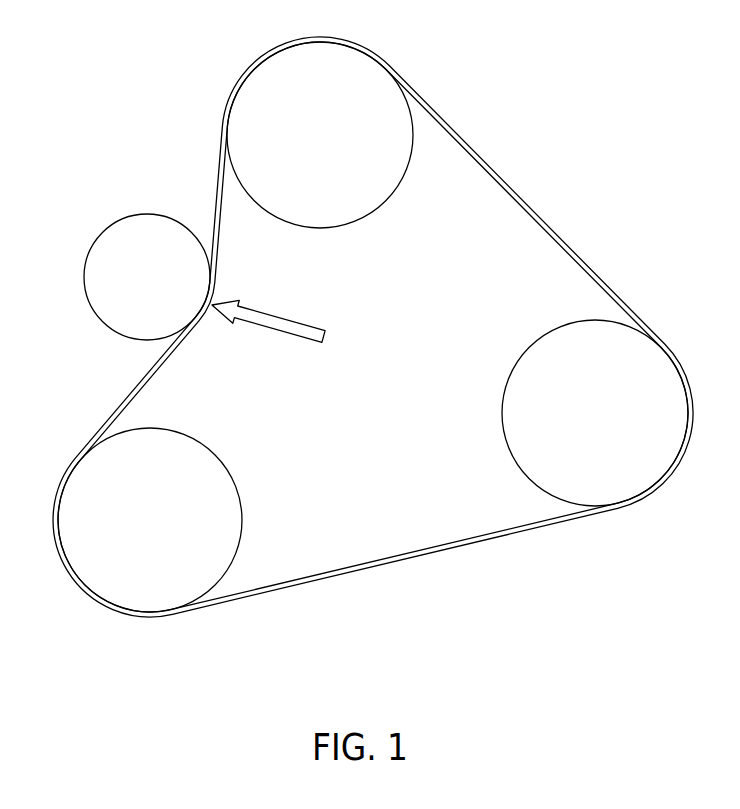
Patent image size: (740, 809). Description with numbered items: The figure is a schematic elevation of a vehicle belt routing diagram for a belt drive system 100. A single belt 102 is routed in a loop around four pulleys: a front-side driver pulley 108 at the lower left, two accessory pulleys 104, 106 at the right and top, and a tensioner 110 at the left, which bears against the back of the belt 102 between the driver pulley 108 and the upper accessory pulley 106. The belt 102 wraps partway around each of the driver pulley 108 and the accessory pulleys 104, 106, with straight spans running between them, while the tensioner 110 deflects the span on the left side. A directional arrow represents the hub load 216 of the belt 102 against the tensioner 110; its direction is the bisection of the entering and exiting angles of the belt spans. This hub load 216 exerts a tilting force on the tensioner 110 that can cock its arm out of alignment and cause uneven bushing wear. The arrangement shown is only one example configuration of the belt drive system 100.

The belt drive system 100 is at (362, 326).
The belt 102 is at (460, 550).
The accessory pulley 104 is at (510, 386).
The accessory pulley 106 is at (373, 200).
The front-side driver pulley 108 is at (235, 495).
The tensioner 110 is at (97, 293).
The hub load 216 is at (277, 332).